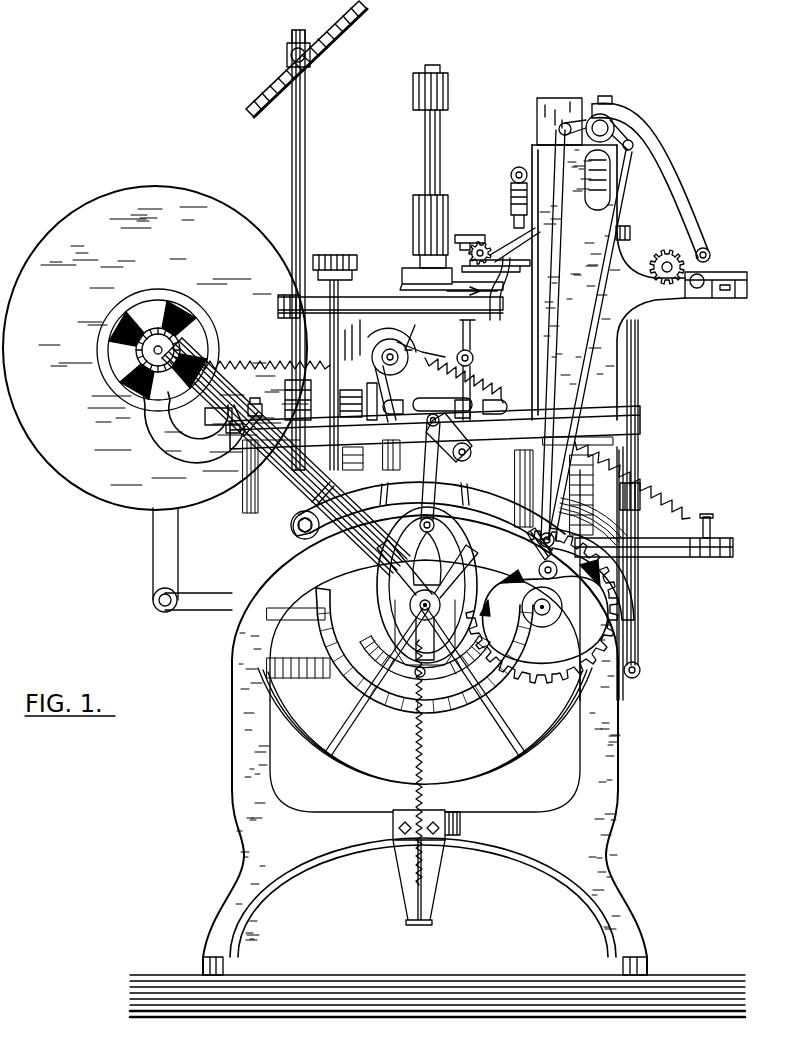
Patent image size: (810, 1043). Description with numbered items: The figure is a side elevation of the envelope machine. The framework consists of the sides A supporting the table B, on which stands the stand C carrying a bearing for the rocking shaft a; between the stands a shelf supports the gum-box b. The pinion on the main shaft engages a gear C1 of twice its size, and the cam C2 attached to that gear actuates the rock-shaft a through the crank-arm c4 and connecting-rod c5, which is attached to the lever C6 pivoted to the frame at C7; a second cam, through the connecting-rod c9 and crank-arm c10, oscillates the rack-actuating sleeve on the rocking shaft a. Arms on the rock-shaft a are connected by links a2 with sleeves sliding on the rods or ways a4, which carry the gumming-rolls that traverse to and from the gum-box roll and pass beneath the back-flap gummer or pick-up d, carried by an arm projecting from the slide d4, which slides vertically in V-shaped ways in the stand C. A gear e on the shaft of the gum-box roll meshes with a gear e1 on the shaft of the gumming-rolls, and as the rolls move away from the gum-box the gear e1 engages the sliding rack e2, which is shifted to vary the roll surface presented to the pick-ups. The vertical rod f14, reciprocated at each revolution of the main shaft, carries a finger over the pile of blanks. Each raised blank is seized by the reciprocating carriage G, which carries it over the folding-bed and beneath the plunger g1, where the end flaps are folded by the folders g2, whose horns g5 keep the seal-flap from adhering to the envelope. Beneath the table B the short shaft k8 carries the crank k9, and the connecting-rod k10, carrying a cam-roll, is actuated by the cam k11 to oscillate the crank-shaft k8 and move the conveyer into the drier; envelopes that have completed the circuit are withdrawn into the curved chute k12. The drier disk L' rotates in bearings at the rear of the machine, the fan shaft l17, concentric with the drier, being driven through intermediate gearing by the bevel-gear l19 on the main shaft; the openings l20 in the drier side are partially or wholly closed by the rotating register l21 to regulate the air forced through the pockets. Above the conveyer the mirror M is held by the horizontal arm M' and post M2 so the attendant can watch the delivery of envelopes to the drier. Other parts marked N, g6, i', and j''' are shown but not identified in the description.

The sides A is at (425, 711).
The table B is at (435, 427).
The stand C is at (608, 282).
The gear C1 is at (512, 678).
The cam C2 is at (553, 580).
The lever C6 is at (429, 516).
The pivot C7 is at (304, 538).
The reciprocating carriage G is at (400, 300).
The disk L' is at (155, 348).
The mirror M is at (306, 59).
The horizontal arm M' is at (279, 48).
The post M2 is at (305, 152).
The knob N is at (338, 257).
The bevel-gear l19 is at (424, 642).
The rocking shaft a is at (596, 132).
The links a2 is at (515, 214).
The rods or ways a4 is at (520, 262).
The gum-box b is at (716, 284).
The crank-arm c4 is at (622, 140).
The connecting-rod c5 is at (598, 306).
The connecting-rod c9 is at (552, 320).
The crank-arm c10 is at (577, 131).
The back-flap gummer or pick-up d is at (630, 234).
The slide d4 is at (537, 128).
The gear e is at (668, 256).
The gear e1 is at (483, 242).
The sliding rack e2 is at (470, 238).
The vertical rod f14 is at (638, 426).
The plunger g1 is at (404, 276).
The folders g2 is at (404, 351).
The horns g5 is at (464, 359).
The pulley g6 is at (473, 370).
The lever i' is at (421, 332).
The rods j''' is at (350, 340).
The short shaft k8 is at (470, 452).
The crank k9 is at (449, 431).
The connecting-rod k10 is at (427, 438).
The cam k11 is at (427, 592).
The curved chute k12 is at (376, 394).
The shaft l17 is at (201, 417).
The openings l20 is at (200, 322).
The rotating register l21 is at (205, 344).